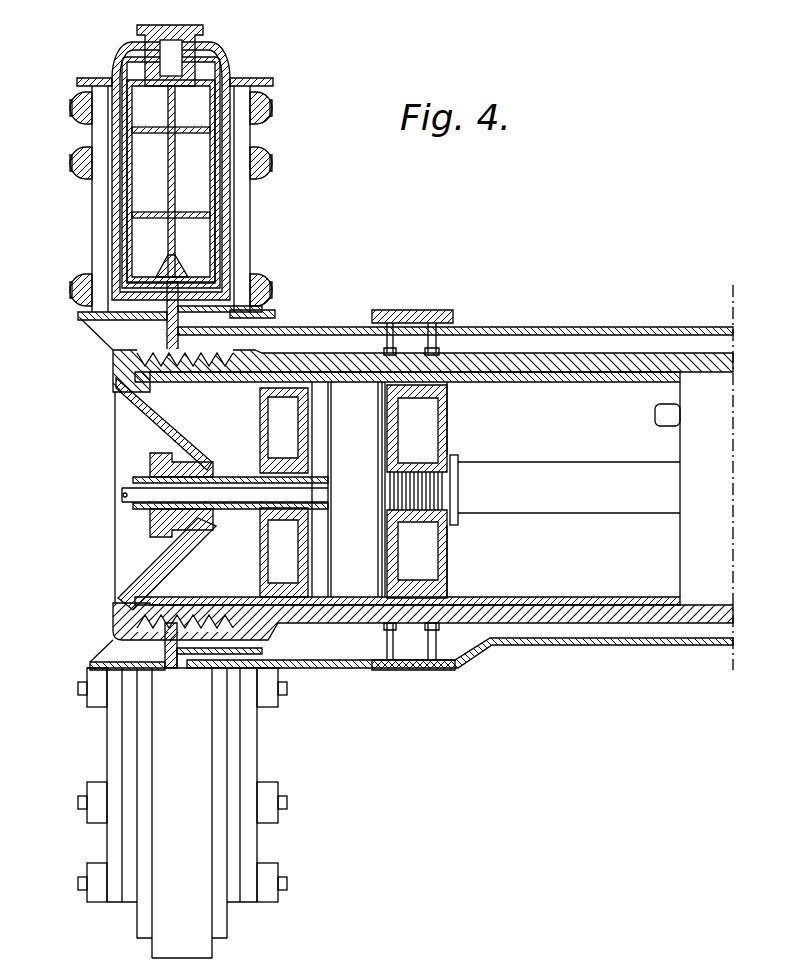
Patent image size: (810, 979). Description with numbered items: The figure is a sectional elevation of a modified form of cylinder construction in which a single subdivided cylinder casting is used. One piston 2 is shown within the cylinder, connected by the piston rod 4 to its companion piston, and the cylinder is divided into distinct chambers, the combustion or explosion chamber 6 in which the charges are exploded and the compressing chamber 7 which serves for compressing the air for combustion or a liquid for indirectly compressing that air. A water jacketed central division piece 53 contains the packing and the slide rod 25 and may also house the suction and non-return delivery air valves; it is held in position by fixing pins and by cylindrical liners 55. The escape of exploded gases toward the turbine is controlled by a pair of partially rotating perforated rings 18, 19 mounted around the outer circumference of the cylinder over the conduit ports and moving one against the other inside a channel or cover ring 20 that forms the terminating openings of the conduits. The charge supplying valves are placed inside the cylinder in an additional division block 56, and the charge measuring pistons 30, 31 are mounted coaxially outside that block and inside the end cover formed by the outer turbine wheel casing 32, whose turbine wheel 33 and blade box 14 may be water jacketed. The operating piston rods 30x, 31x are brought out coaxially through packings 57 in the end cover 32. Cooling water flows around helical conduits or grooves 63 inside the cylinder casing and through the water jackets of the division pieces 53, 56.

The piston 2 is at (447, 578).
The piston rod 4 is at (565, 490).
The combustion or explosion chamber 6 is at (385, 580).
The compressing chamber 7 is at (509, 489).
The turbine blade box 14 is at (216, 192).
The partially rotating perforated ring 18 is at (414, 672).
The partially rotating perforated ring 19 is at (392, 672).
The channel or cover ring 20 is at (447, 672).
The slide rod 25 is at (655, 418).
The charge measuring piston 30 is at (258, 356).
The operating piston rod 30x is at (133, 479).
The charge measuring piston 31 is at (298, 413).
The operating piston rod 31x is at (262, 512).
The outer turbine wheel casing 32 is at (106, 232).
The turbine wheel 33 is at (168, 174).
The central division piece 53 is at (706, 477).
The cylindrical liner 55 is at (505, 385).
The division block 56 is at (347, 489).
The packing 57 is at (166, 494).
The helical conduit or groove 63 is at (510, 594).